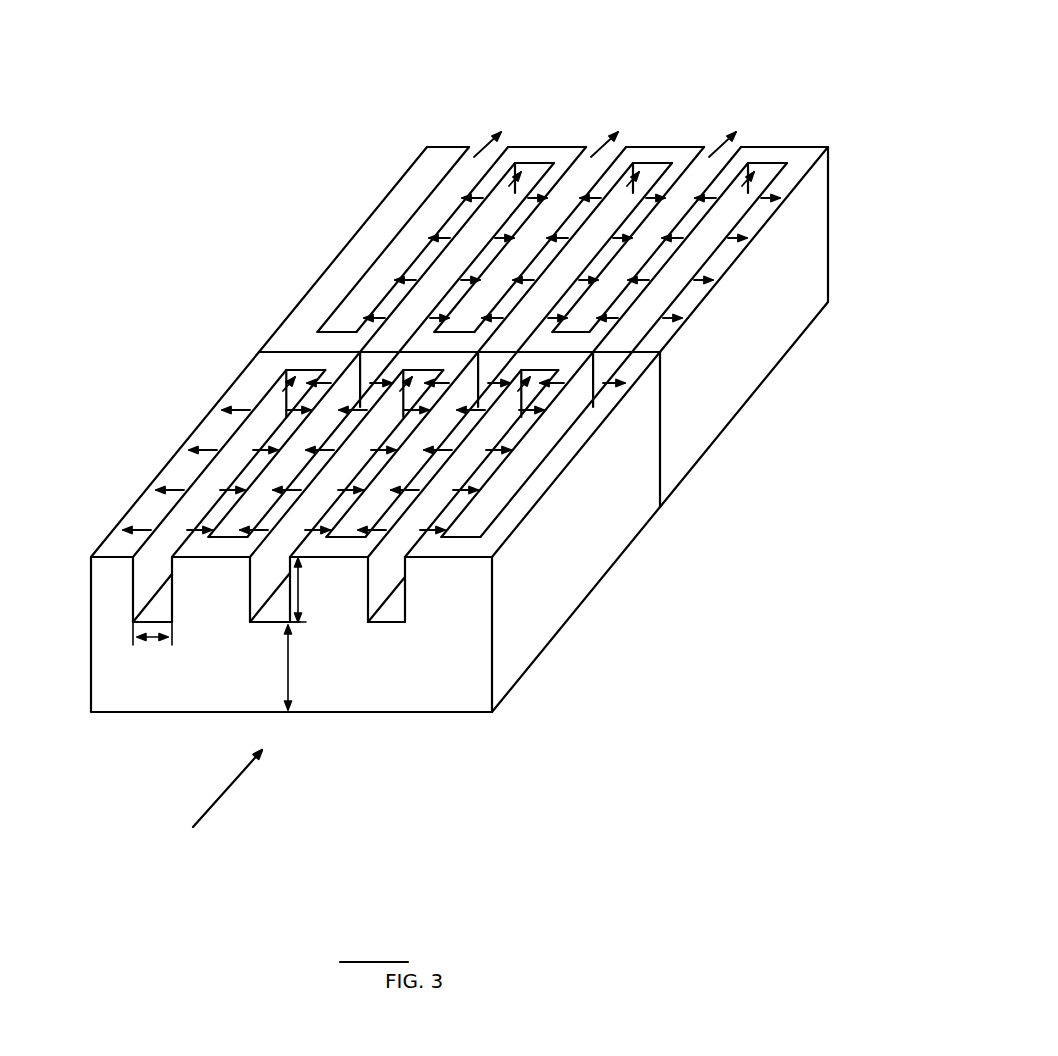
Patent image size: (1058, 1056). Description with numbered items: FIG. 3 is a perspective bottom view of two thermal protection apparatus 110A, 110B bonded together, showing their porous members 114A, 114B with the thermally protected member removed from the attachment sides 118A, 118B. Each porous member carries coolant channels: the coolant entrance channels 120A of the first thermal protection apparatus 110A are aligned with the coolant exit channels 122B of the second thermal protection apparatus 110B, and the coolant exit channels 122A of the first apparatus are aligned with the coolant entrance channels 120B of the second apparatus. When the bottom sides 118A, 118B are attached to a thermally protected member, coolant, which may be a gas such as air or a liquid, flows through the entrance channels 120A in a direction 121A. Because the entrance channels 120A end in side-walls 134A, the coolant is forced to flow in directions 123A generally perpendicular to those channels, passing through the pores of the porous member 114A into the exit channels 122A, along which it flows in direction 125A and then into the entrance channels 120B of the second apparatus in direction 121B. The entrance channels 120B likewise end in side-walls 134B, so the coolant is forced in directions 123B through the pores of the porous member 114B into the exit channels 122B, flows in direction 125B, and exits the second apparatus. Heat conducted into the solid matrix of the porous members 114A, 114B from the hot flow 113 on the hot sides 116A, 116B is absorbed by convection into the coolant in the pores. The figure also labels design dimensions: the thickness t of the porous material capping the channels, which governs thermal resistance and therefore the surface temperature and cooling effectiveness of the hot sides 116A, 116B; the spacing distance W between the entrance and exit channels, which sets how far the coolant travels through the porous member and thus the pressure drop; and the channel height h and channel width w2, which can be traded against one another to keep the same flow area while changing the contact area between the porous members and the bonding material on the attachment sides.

The first thermal protection apparatus 110A is at (100, 673).
The second thermal protection apparatus 110B is at (322, 278).
The hot flow 113 is at (223, 793).
The porous member of first thermal protection apparatus 114A is at (577, 550).
The porous member of second thermal protection apparatus 114B is at (750, 355).
The hot side of first porous member 116A is at (635, 545).
The hot side of second porous member 116B is at (806, 330).
The attachment side of first porous member 118A is at (520, 525).
The attachment side of second porous member 118B is at (686, 322).
The coolant entrance channels of first thermal protection apparatus 120A is at (157, 613).
The coolant entrance channels of second thermal protection apparatus 120B is at (530, 157).
The direction of coolant flow in first entrance channels 121A is at (212, 478).
The direction of coolant flow in second entrance channels 121B is at (447, 267).
The coolant exit channels of first thermal protection apparatus 122A is at (230, 523).
The coolant exit channels of second thermal protection apparatus 122B is at (445, 220).
The directions of coolant flow perpendicular to first entrance channels 123A is at (145, 530).
The directions of coolant flow perpendicular to second entrance channels 123B is at (441, 235).
The direction of coolant flow in first exit channels 125A is at (343, 390).
The direction of coolant flow in second exit channels 125B is at (447, 233).
The side-walls of first entrance channels 134A is at (295, 380).
The side-walls of second entrance channels 134B is at (545, 160).
The height of channels h is at (300, 590).
The thickness of porous member capping the channels t is at (290, 668).
The width of cooling channels w2 is at (148, 640).
The spacing distance between entrance and exit channels W is at (508, 372).